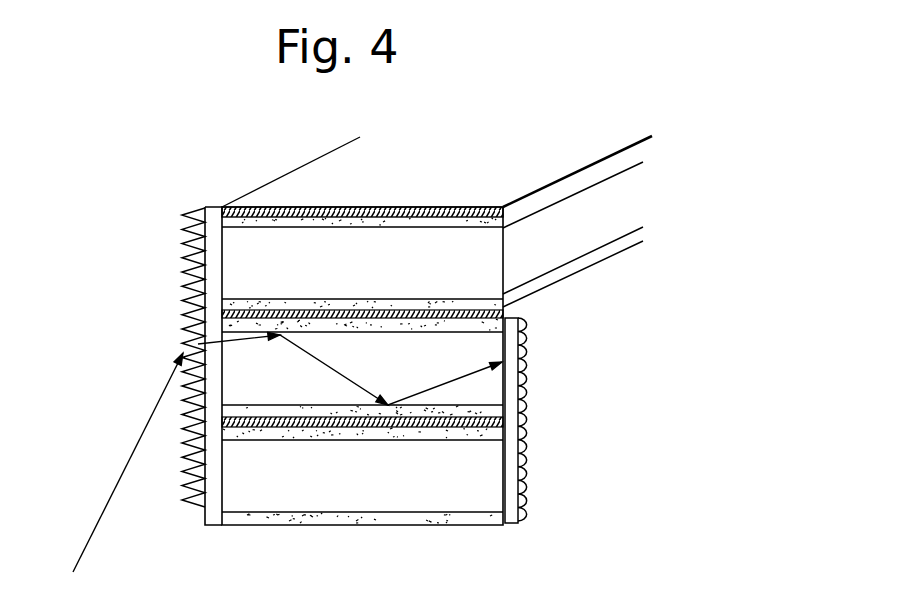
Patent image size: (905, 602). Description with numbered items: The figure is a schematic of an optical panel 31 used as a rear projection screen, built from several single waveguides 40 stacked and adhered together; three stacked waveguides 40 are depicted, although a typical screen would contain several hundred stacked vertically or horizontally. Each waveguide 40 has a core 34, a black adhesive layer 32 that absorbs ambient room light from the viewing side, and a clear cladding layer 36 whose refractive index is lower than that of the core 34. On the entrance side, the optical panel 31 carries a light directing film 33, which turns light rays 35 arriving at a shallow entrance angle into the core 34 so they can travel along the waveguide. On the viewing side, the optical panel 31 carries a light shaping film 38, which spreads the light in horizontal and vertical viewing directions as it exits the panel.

The optical panel 31 is at (718, 327).
The black adhesive layer 32 is at (466, 208).
The light directing film 33 is at (183, 203).
The core 34 is at (606, 213).
The light rays 35 is at (153, 387).
The clear cladding layer 36 is at (520, 294).
The light shaping film 38 is at (533, 420).
The single waveguide 40 is at (655, 212).